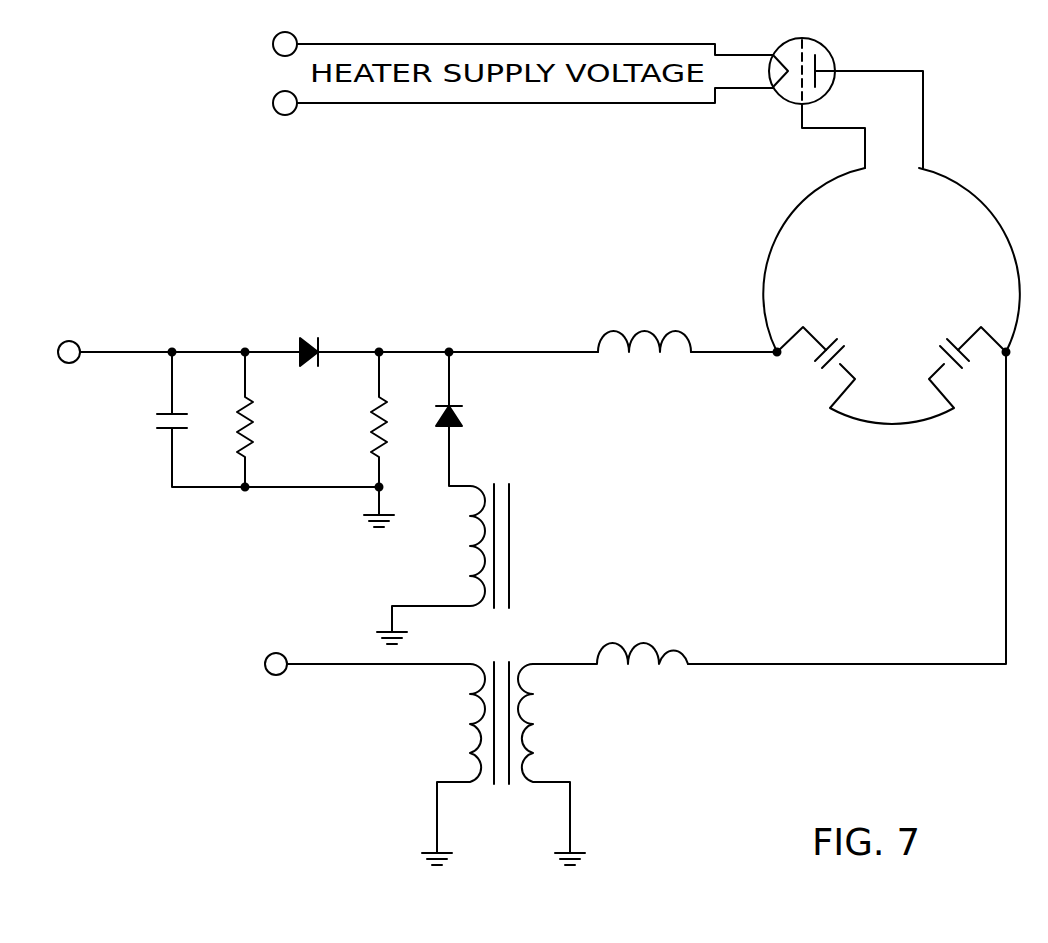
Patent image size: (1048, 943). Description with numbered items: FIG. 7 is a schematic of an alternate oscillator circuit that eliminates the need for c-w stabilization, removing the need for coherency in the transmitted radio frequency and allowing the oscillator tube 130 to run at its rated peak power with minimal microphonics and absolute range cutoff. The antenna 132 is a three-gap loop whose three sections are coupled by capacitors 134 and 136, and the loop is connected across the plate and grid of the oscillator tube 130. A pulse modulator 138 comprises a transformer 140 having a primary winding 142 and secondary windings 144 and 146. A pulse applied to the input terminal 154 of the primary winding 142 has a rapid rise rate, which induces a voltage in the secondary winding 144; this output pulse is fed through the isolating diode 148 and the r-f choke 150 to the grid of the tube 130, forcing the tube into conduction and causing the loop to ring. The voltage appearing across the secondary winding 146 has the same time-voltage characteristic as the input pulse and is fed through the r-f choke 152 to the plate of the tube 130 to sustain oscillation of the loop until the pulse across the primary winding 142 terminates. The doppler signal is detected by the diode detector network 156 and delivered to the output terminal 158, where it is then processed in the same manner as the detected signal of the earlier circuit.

The oscillator tube 130 is at (790, 105).
The antenna 132 is at (855, 296).
The capacitor 134 is at (835, 340).
The capacitor 136 is at (948, 340).
The pulse modulator 138 is at (393, 751).
The transformer 140 is at (493, 648).
The primary winding 142 is at (462, 722).
The secondary winding 144 is at (440, 484).
The secondary winding 146 is at (545, 722).
The isolating diode 148 is at (467, 418).
The r-f choke 150 is at (646, 331).
The r-f choke 152 is at (645, 642).
The input terminal 154 is at (276, 652).
The diode detector network 156 is at (275, 432).
The output terminal 158 is at (69, 341).